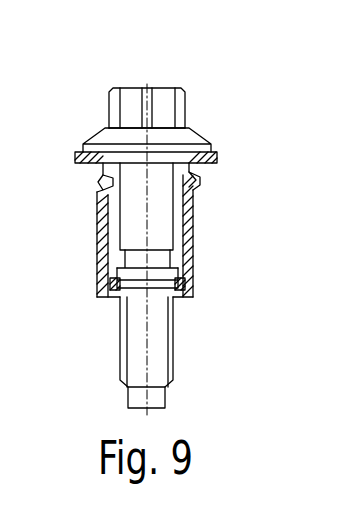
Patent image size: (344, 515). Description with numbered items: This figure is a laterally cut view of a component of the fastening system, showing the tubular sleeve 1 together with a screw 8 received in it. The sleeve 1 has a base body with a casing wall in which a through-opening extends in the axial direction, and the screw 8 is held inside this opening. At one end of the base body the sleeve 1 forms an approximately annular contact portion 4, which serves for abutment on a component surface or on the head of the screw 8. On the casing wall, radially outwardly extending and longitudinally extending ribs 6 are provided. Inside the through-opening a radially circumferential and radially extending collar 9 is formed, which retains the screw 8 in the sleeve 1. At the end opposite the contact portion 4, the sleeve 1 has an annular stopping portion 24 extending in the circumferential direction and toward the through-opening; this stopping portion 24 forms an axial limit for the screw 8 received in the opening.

The tubular sleeve 1 is at (187, 260).
The contact portion 4 is at (212, 156).
The ribs 6 is at (190, 210).
The screw 8 is at (163, 103).
The collar 9 is at (180, 177).
The stopping portion 24 is at (182, 285).